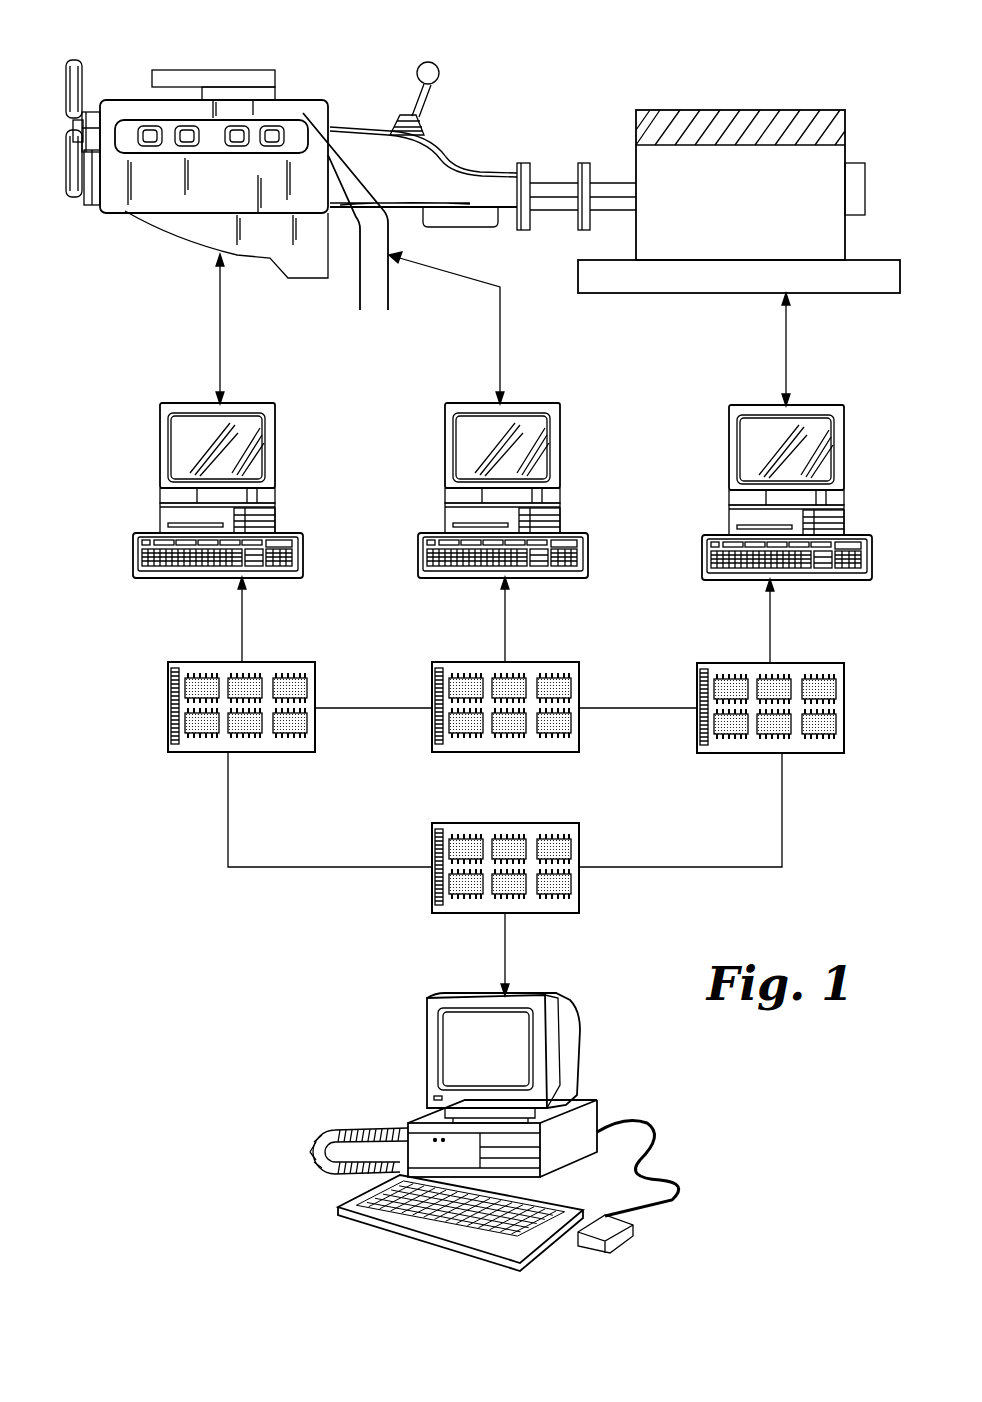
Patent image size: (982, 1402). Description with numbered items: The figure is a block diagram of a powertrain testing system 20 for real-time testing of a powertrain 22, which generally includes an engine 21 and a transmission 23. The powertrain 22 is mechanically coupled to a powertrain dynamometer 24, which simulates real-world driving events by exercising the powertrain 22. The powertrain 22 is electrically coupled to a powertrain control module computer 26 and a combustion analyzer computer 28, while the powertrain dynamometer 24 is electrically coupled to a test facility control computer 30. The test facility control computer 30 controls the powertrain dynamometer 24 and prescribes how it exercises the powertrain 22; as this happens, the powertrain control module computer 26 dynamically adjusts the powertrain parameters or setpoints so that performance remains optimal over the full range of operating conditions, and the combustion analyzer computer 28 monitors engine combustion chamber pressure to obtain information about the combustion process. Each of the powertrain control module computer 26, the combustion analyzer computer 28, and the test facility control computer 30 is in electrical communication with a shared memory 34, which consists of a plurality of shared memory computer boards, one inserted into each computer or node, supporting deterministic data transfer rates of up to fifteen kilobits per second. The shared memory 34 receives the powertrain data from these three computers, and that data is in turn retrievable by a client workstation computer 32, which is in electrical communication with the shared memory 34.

The powertrain testing system 20 is at (225, 935).
The engine 21 is at (300, 121).
The powertrain 22 is at (138, 182).
The transmission 23 is at (423, 160).
The powertrain dynamometer 24 is at (802, 110).
The powertrain control module computer 26 is at (160, 460).
The combustion analyzer computer 28 is at (445, 462).
The test facility control computer 30 is at (729, 462).
The client workstation computer 32 is at (427, 1047).
The shared memory 34 is at (863, 650).